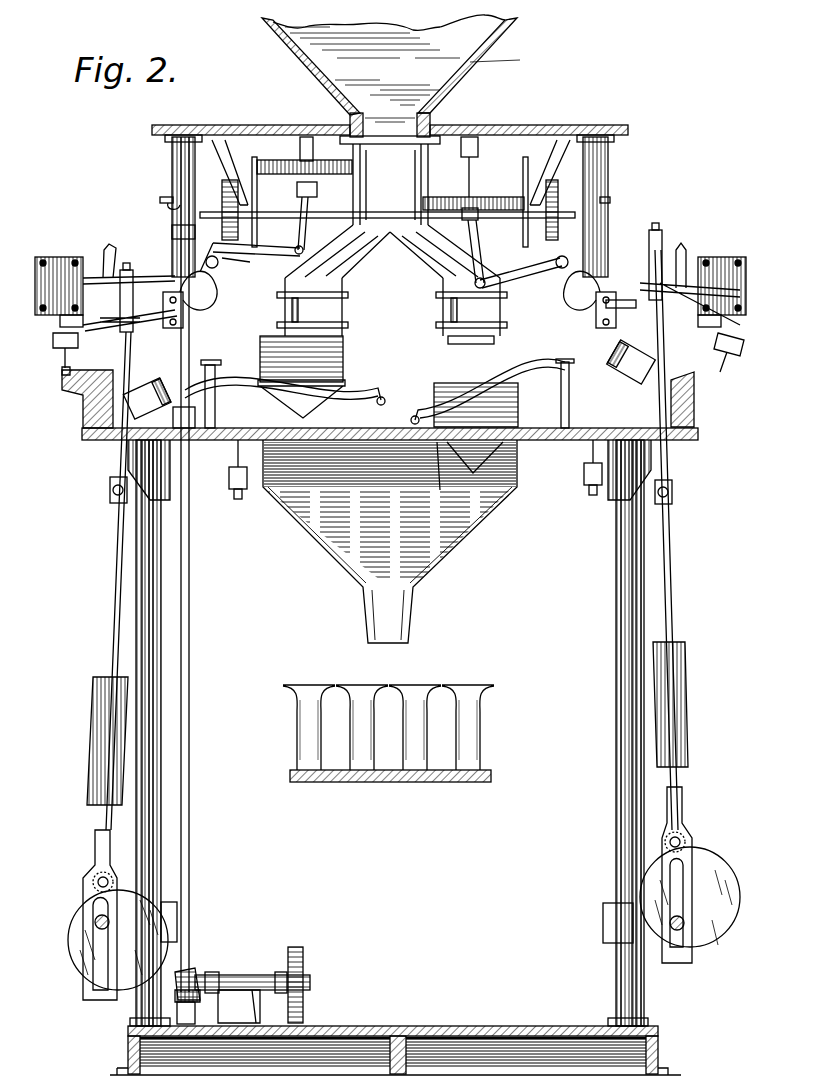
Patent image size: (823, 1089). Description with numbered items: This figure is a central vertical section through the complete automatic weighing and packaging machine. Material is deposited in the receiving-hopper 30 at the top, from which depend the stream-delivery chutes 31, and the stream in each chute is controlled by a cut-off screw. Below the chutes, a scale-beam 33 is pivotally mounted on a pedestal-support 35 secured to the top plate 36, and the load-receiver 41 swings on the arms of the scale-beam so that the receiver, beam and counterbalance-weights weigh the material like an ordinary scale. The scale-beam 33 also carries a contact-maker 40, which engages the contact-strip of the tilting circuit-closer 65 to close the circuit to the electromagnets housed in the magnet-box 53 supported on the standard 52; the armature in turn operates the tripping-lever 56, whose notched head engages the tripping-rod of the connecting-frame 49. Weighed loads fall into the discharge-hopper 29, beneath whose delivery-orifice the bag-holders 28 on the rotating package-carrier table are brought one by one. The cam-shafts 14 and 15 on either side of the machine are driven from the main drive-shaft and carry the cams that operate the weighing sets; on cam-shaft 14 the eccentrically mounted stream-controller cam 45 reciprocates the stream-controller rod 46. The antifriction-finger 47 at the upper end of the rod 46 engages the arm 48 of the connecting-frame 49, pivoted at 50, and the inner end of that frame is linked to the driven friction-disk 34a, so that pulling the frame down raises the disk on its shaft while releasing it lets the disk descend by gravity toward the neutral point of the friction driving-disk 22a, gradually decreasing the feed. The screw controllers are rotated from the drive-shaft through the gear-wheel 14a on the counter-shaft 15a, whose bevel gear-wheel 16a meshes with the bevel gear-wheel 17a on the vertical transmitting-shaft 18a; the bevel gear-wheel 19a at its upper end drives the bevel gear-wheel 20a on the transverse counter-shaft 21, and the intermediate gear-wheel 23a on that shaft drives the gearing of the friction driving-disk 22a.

The cam-shaft 14 is at (682, 928).
The gear-wheel 14a is at (303, 1000).
The cam-shaft 15 is at (97, 925).
The counter-shaft 15a is at (278, 972).
The bevel gear-wheel 16a is at (205, 962).
The bevel gear-wheel 17a is at (180, 998).
The vertical transmitting-shaft 18a is at (190, 670).
The bevel gear-wheel 19a is at (168, 205).
The bevel gear-wheel 20a is at (195, 225).
The transverse counter-shaft 21 is at (389, 238).
The friction driving-disk 22a is at (252, 230).
The intermediate gear-wheel 23a is at (224, 230).
The bag-holders 28 is at (388, 733).
The discharge-hopper 29 is at (390, 541).
The receiving-hopper 30 is at (391, 120).
The stream-delivery chutes 31 is at (392, 298).
The scale-beam 33 is at (215, 368).
The driven friction-disk 34a is at (300, 174).
The pedestal-support 35 is at (208, 440).
The top plate 36 is at (376, 443).
The contact-maker 40 is at (127, 405).
The load-receiver 41 is at (388, 404).
The stream-controller cam 45 is at (404, 816).
The stream-controller rod 46 is at (108, 460).
The antifriction-finger 47 is at (115, 300).
The arm 48 is at (160, 292).
The connecting-frame 49 is at (218, 266).
The pivot 50 is at (222, 285).
The standard 52 is at (618, 312).
The magnet-box 53 is at (390, 292).
The tripping-lever 56 is at (112, 268).
The tilting circuit-closer 65 is at (102, 375).